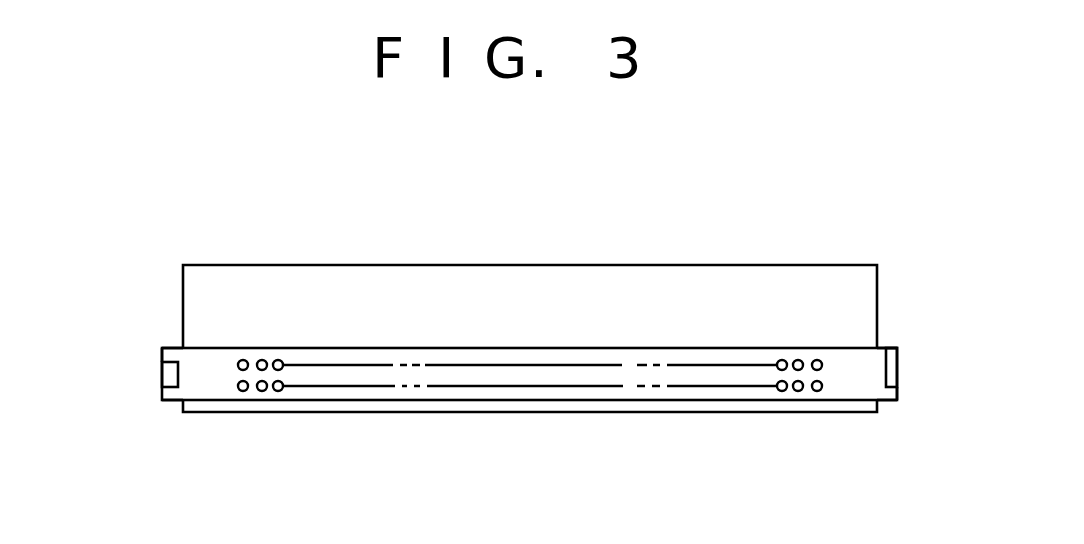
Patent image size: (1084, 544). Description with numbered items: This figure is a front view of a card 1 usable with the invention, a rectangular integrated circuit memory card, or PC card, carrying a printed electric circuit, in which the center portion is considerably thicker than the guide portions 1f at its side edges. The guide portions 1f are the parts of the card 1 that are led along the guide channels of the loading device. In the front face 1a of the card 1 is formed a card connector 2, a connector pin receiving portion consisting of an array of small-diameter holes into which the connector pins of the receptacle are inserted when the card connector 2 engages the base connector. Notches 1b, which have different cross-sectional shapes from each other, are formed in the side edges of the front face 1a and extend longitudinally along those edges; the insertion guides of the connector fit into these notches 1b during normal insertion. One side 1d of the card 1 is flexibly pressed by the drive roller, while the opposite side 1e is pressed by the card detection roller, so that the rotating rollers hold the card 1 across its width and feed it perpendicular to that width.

The card 1 is at (528, 265).
The front face 1a is at (842, 388).
The notches 1b is at (160, 377).
The side 1d is at (162, 350).
The side 1e is at (902, 393).
The guide portions 1f is at (170, 347).
The card connector 2 is at (278, 391).